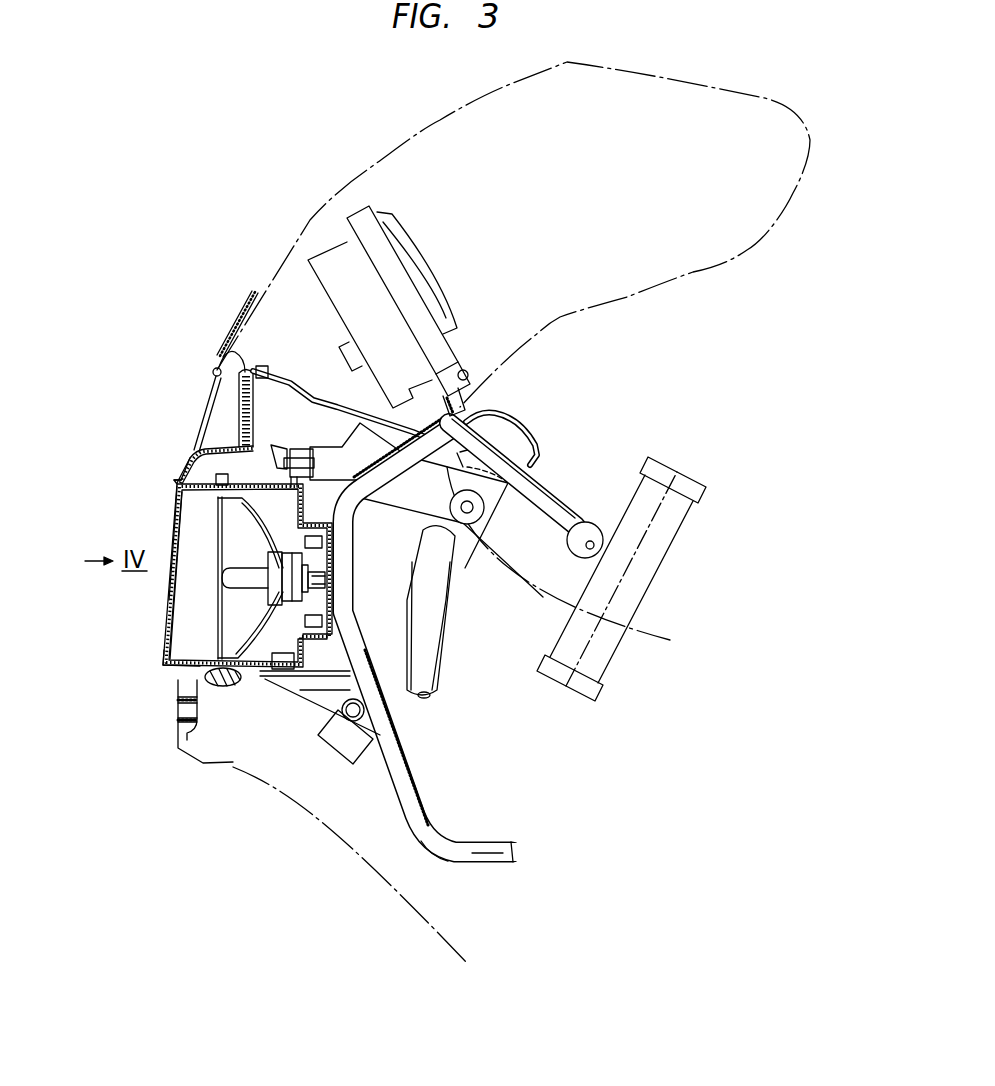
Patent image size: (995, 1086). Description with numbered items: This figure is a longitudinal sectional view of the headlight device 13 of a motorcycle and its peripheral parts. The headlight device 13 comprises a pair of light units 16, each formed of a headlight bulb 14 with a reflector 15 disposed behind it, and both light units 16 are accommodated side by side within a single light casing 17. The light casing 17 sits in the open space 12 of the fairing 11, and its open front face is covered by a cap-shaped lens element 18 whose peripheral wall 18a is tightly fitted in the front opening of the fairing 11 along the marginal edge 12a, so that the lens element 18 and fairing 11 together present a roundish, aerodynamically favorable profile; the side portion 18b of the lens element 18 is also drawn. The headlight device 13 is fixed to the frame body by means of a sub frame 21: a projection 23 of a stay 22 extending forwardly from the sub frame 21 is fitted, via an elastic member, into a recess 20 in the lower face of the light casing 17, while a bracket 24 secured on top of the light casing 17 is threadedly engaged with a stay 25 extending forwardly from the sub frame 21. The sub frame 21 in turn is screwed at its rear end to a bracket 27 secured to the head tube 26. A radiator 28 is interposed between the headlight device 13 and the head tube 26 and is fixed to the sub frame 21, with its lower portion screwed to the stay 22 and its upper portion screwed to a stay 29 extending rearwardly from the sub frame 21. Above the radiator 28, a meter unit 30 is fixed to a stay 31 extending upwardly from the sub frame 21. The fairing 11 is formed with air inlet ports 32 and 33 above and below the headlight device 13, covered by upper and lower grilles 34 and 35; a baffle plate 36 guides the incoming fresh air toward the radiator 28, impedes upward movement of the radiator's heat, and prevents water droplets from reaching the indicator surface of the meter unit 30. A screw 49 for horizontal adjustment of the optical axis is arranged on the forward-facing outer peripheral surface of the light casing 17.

The fairing 11 is at (283, 245).
The open space 12 is at (207, 467).
The marginal edge 12a is at (178, 482).
The headlight device 13 is at (155, 598).
The headlight bulb 14 is at (242, 583).
The reflector 15 is at (233, 522).
The light unit 16 is at (200, 548).
The light casing 17 is at (257, 670).
The lens element 18 is at (163, 661).
The peripheral wall 18a is at (196, 452).
The side housing wall 18b is at (176, 506).
The recess 20 is at (280, 655).
The sub frame 21 is at (430, 812).
The stay 22 is at (325, 701).
The projection 23 is at (283, 679).
The bracket 24 is at (287, 446).
The stay 25 is at (333, 453).
The head tube 26 is at (660, 556).
The bracket 27 is at (602, 532).
The radiator 28 is at (463, 560).
The stay 29 is at (407, 497).
The meter unit 30 is at (430, 270).
The stay 31 is at (477, 397).
The air inlet port 32 is at (197, 374).
The air inlet port 33 is at (177, 728).
The upper grille 34 is at (220, 405).
The lower grille 35 is at (178, 710).
The baffle plate 36 is at (285, 367).
The screw 49 is at (240, 330).